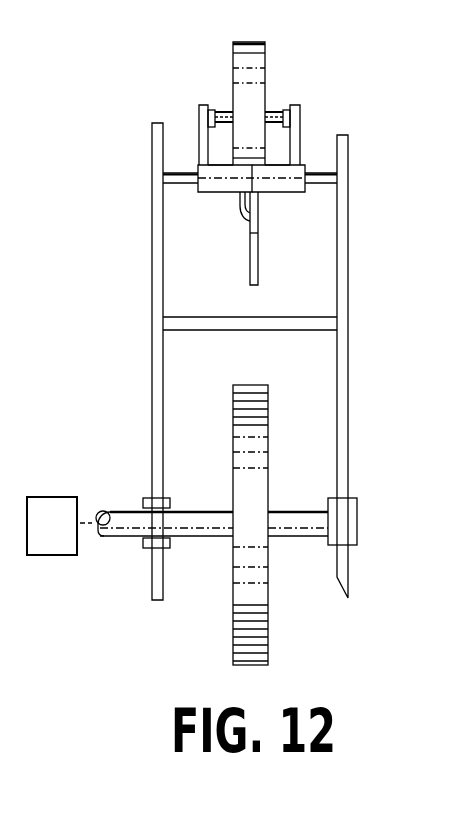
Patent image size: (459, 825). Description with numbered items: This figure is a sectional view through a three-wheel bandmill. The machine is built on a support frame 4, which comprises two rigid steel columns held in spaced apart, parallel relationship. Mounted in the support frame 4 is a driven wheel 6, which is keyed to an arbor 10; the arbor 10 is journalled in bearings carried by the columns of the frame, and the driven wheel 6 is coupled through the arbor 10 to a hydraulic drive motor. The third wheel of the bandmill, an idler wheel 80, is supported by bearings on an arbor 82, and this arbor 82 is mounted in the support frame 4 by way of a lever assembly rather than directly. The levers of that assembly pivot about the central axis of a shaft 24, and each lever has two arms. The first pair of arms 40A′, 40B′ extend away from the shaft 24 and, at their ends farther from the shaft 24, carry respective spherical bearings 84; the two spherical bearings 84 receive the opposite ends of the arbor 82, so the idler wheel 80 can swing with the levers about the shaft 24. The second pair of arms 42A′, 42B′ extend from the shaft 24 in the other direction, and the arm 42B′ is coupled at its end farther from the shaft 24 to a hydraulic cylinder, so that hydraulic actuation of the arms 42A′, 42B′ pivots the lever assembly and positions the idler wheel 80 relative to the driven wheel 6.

The support frame 4 is at (153, 573).
The driven wheel 6 is at (268, 623).
The arbor 10 is at (193, 540).
The shaft 24 is at (320, 170).
The arm 40A′ is at (197, 122).
The arm 40B′ is at (303, 124).
The arm 42A′ is at (250, 245).
The arm 42B′ is at (259, 203).
The idler wheel 80 is at (243, 42).
The arbor 82 is at (268, 103).
The spherical bearings 84 is at (220, 103).